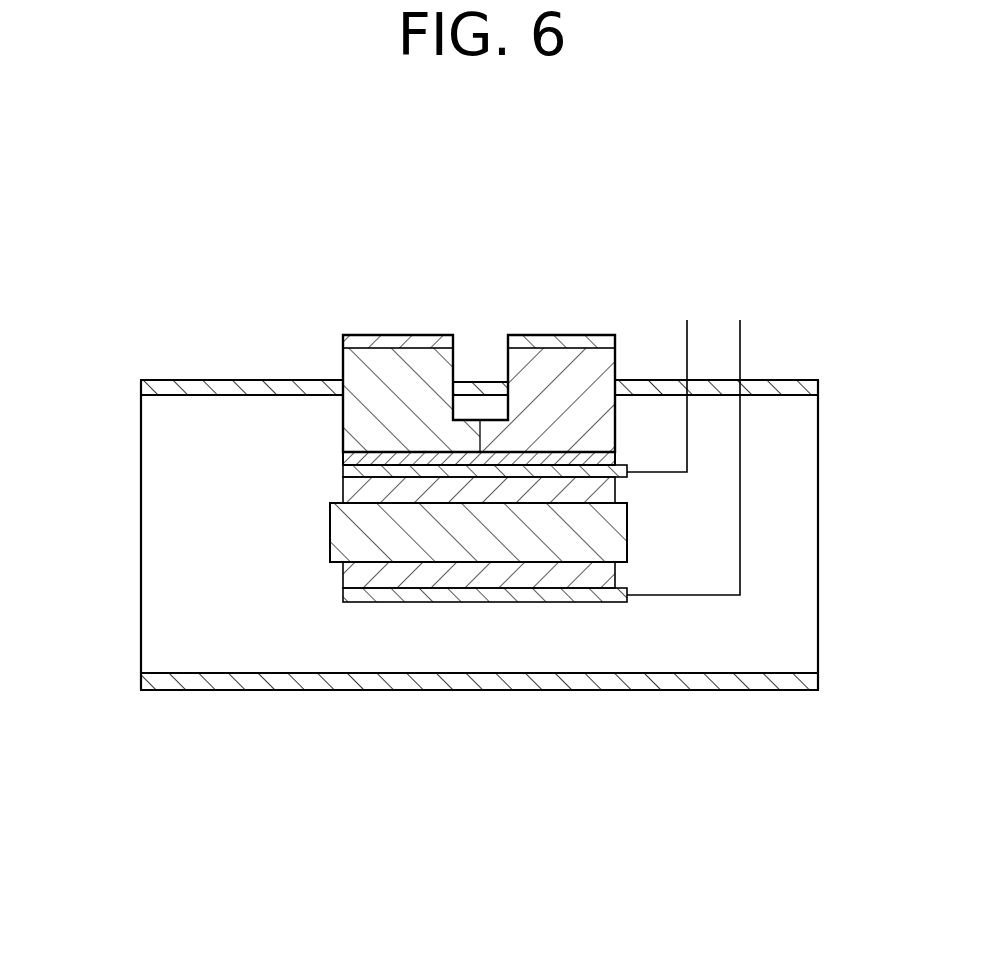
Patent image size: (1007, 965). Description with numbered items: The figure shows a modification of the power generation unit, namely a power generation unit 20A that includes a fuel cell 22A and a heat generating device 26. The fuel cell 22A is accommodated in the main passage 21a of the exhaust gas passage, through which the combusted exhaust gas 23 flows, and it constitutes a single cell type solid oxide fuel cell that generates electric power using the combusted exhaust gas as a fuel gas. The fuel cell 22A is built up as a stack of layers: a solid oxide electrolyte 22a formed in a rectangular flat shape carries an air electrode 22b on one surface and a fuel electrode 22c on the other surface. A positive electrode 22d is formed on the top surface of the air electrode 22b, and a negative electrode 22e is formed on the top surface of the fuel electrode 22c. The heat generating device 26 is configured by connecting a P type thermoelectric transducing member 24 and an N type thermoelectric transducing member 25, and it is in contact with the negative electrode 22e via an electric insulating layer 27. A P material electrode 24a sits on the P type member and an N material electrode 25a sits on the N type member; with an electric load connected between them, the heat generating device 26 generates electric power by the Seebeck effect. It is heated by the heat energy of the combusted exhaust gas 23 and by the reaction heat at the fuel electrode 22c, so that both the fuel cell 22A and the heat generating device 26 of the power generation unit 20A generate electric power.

The power generation unit 20A is at (762, 278).
The main passage 21a is at (150, 679).
The combusted exhaust gas 23 is at (199, 539).
The heat generating device 26 is at (478, 327).
The P material electrode 24a is at (370, 337).
The P type thermoelectric transducing member 24 is at (430, 357).
The N material electrode 25a is at (535, 337).
The N type thermoelectric transducing member 25 is at (549, 355).
The electric insulating layer 27 is at (343, 458).
The fuel cell 22A is at (485, 647).
The negative electrode 22e is at (387, 470).
The fuel electrode 22c is at (427, 490).
The solid oxide electrolyte 22a is at (483, 540).
The air electrode 22b is at (549, 582).
The positive electrode 22d is at (498, 681).